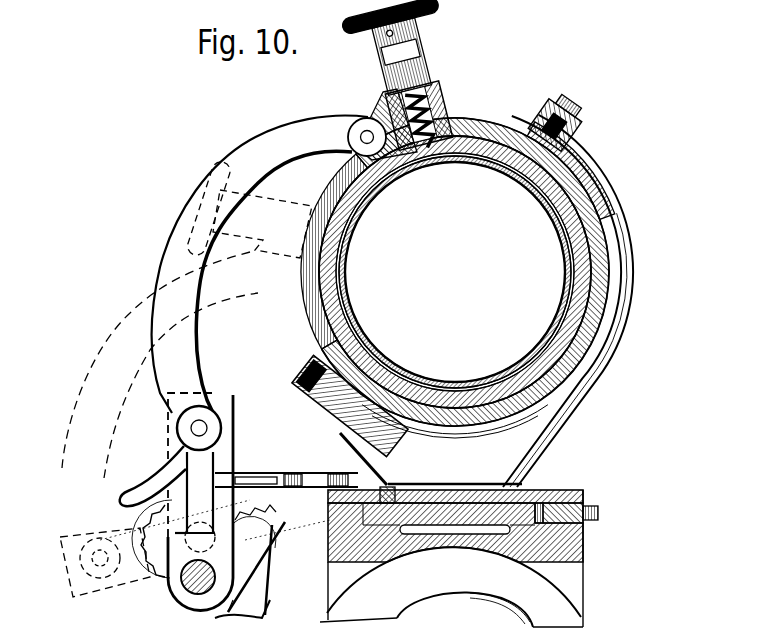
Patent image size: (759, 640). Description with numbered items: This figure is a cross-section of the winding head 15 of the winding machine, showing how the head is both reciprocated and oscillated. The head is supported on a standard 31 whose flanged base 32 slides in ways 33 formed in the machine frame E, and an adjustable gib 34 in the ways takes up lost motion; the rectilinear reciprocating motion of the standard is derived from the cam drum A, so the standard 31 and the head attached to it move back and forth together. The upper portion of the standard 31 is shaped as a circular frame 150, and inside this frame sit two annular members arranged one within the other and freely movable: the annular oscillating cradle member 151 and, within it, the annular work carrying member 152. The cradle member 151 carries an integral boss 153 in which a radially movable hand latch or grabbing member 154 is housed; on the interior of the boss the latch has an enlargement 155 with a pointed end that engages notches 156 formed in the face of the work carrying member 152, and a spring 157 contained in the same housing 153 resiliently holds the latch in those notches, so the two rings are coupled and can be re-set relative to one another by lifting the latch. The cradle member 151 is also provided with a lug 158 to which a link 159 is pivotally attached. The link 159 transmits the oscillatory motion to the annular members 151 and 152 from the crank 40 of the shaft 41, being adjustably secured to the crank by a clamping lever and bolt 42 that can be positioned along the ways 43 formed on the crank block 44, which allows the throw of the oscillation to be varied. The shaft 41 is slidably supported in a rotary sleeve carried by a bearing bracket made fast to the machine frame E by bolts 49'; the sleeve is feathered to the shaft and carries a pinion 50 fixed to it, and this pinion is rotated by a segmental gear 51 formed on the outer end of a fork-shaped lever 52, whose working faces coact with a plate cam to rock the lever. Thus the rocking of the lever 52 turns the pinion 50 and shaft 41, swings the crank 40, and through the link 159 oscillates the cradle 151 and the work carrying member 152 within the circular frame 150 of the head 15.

The winding head 15 is at (644, 269).
The standard 31 is at (444, 454).
The flanged base 32 is at (537, 488).
The ways 33 is at (583, 501).
The adjustable gib 34 is at (583, 530).
The crank 40 is at (193, 593).
The shaft 41 is at (150, 576).
The clamping lever and bolt 42 is at (189, 428).
The ways 43 is at (231, 446).
The crank block 44 is at (203, 468).
The bolts 49' is at (286, 468).
The pinion 50 is at (163, 526).
The segmental gear 51 is at (278, 561).
The fork-shaped lever 52 is at (268, 617).
The circular frame 150 is at (588, 188).
The annular oscillating cradle member 151 is at (574, 213).
The annular work carrying member 152 is at (590, 257).
The boss 153 is at (437, 96).
The hand latch 154 is at (417, 55).
The enlargement 155 is at (461, 130).
The notches 156 is at (530, 170).
The spring 157 is at (436, 112).
The lug 158 is at (381, 110).
The link 159 is at (282, 131).
The machine frame E is at (585, 549).
The cam drum A is at (582, 620).